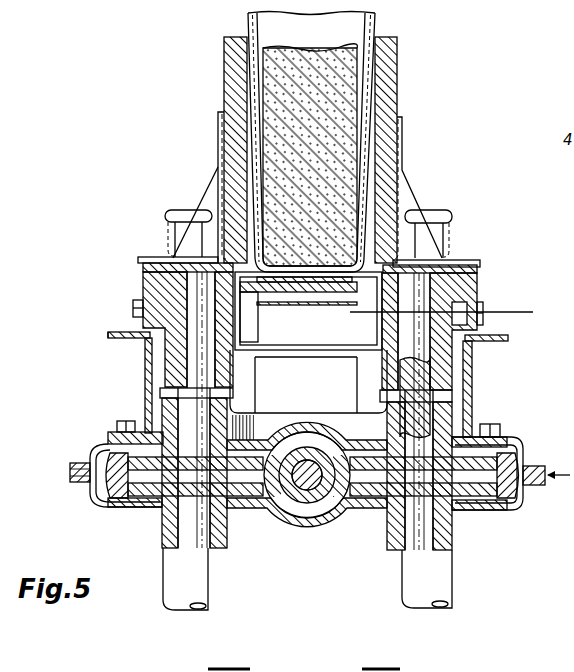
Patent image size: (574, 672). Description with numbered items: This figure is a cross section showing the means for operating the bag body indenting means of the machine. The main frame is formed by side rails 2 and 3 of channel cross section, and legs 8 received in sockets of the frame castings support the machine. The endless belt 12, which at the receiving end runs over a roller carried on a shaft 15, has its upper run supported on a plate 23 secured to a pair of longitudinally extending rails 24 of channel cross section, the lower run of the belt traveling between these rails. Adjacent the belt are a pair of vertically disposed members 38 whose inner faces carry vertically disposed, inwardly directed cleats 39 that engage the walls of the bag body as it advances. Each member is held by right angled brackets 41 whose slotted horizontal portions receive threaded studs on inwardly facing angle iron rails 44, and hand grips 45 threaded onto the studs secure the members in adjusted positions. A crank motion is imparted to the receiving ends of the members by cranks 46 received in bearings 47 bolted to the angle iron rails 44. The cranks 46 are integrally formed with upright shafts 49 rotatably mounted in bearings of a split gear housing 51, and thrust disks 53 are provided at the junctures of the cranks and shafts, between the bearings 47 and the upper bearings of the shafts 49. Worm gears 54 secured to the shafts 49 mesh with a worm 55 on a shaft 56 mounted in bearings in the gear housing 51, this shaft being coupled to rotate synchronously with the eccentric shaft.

The side rail 2 is at (500, 433).
The side rail 3 is at (108, 335).
The leg 8 is at (172, 592).
The endless belt 12 is at (300, 283).
The shaft 15 is at (350, 314).
The plate 23 is at (283, 284).
The longitudinally extending rail 24 is at (240, 322).
The vertically disposed member 38 is at (232, 52).
The cleat 39 is at (247, 92).
The right angled bracket 41 is at (218, 150).
The angle iron rail 44 is at (143, 272).
The hand grip 45 is at (178, 213).
The crank 46 is at (190, 355).
The bearing 47 is at (148, 343).
The upright shaft 49 is at (190, 527).
The gear housing 51 is at (100, 506).
The thrust disk 53 is at (235, 392).
The worm gear 54 is at (120, 490).
The worm 55 is at (322, 503).
The shaft 56 is at (304, 484).